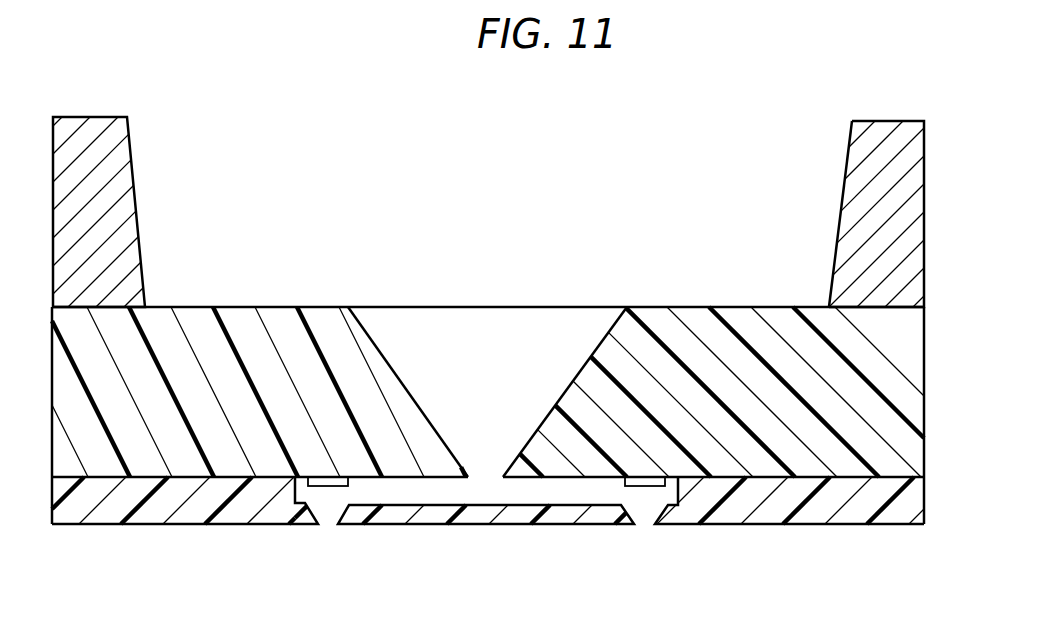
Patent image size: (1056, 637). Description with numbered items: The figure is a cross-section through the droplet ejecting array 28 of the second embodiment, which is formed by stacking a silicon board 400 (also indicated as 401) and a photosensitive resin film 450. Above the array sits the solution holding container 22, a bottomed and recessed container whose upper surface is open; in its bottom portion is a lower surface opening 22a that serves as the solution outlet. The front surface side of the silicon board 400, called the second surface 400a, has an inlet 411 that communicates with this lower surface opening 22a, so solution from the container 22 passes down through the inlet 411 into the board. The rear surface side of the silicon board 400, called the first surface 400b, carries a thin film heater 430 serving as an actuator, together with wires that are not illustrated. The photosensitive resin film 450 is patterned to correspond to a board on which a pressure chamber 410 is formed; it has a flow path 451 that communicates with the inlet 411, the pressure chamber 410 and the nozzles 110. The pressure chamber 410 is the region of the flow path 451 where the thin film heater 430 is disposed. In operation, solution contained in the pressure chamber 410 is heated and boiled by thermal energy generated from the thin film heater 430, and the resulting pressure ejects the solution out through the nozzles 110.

The solution holding container 22 is at (912, 176).
The lower surface opening 22a is at (846, 165).
The droplet ejecting array 28 is at (874, 543).
The nozzles 110 is at (327, 513).
The silicon board 400 is at (924, 395).
The support body portion 401 is at (713, 415).
The second surface 400a is at (685, 307).
The first surface 400b is at (808, 477).
The pressure chamber 410 is at (665, 522).
The inlet 411 is at (485, 343).
The thin film heater 430 is at (327, 487).
The photosensitive resin film 450 is at (924, 500).
The flow path 451 is at (548, 498).